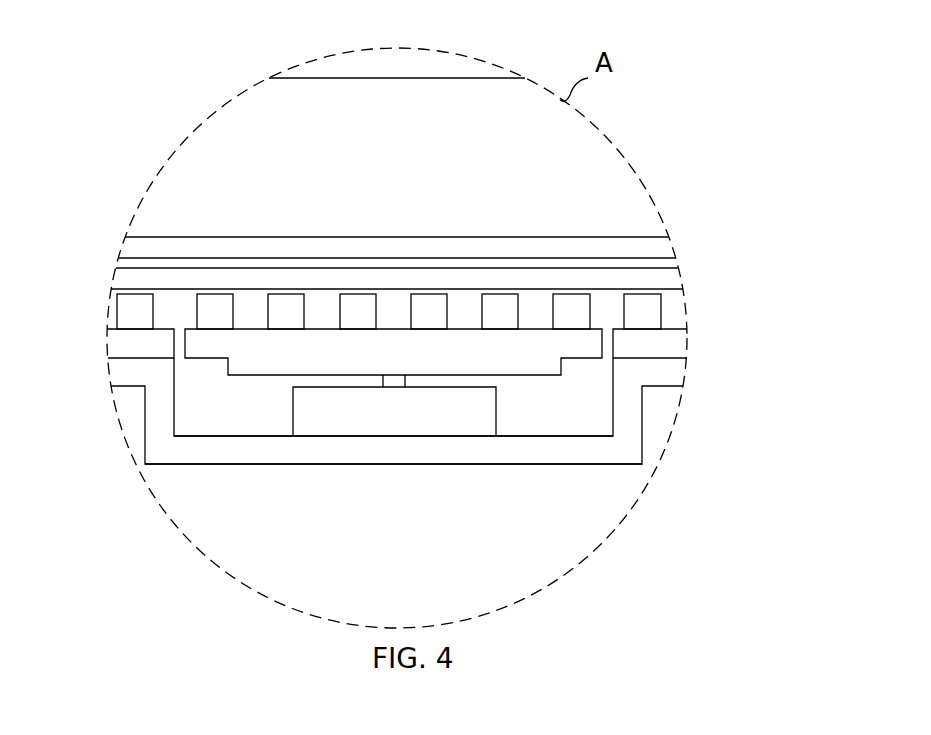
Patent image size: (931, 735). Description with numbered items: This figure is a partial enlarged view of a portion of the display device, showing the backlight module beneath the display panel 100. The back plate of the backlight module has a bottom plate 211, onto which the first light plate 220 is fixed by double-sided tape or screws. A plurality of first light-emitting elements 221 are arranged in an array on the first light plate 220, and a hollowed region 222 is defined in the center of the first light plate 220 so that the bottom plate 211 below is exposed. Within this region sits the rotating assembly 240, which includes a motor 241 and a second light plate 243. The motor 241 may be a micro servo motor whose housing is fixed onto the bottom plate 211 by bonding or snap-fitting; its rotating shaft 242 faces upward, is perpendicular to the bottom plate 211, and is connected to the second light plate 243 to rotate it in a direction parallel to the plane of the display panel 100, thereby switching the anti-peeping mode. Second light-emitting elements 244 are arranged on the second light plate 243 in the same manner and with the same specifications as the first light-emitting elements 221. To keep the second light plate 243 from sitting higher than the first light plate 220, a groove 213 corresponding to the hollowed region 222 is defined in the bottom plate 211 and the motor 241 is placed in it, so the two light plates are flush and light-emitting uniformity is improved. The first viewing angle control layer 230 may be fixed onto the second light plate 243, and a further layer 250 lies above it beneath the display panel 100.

The display panel 100 is at (580, 163).
The encapsulation layer 250 is at (653, 245).
The first viewing angle control layer 230 is at (653, 275).
The first light-emitting element 221 is at (648, 315).
The second light-emitting element 244 is at (222, 303).
The hollowed region 222 is at (176, 342).
The first light plate 220 is at (660, 340).
The bottom plate 211 is at (662, 373).
The groove 213 is at (567, 422).
The rotating assembly 240 is at (393, 459).
The second light plate 243 is at (248, 340).
The rotating shaft 242 is at (398, 378).
The motor 241 is at (398, 455).